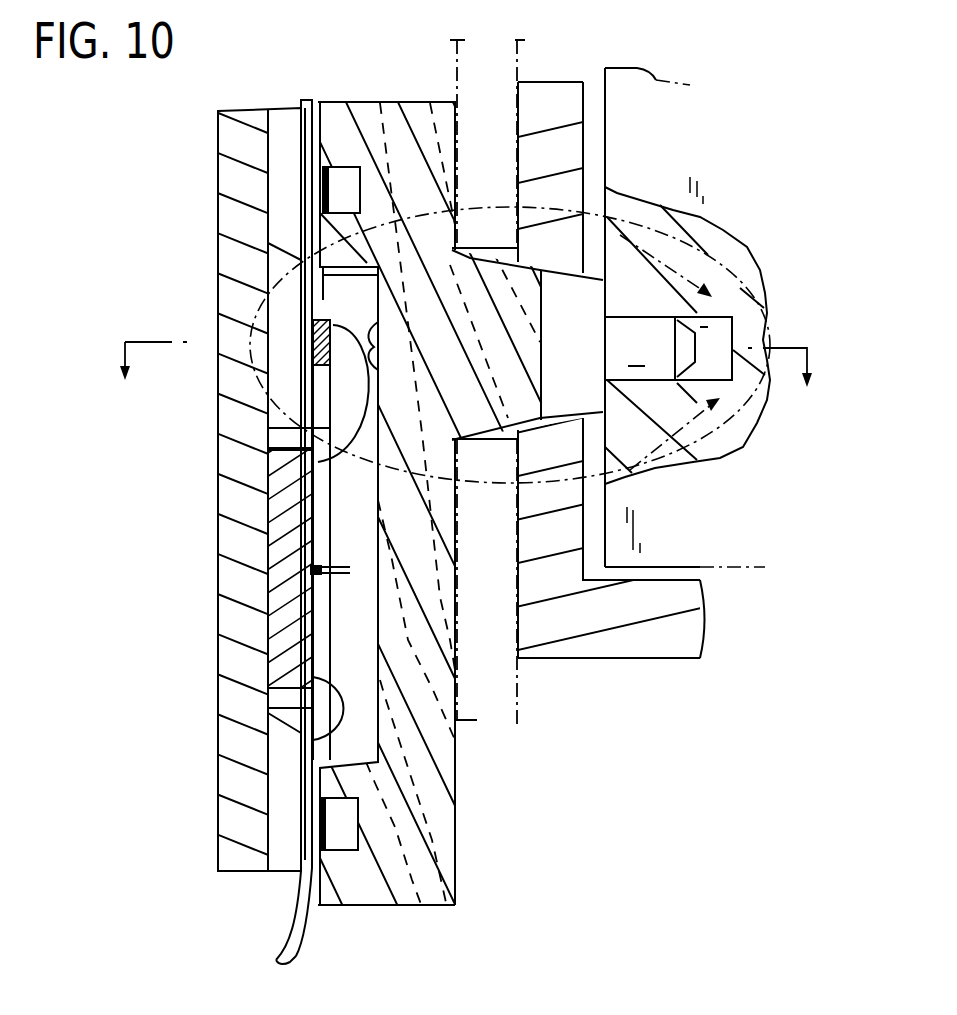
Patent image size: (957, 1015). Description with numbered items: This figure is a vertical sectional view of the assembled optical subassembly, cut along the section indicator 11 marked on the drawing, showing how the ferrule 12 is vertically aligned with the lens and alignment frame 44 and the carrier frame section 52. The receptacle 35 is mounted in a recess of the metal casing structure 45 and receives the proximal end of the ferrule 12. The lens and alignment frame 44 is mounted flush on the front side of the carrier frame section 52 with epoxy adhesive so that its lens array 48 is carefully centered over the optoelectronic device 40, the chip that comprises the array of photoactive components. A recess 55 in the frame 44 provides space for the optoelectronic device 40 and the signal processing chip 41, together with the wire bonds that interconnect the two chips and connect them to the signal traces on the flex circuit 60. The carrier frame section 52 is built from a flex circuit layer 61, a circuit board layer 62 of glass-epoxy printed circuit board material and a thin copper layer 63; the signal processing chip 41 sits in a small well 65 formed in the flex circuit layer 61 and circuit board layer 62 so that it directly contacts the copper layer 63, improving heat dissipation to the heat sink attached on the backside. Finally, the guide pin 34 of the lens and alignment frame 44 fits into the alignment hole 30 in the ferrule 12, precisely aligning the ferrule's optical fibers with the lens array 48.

The section line 11- 11 is at (466, 349).
The ferrule 12 is at (760, 612).
The alignment hole 30 is at (737, 322).
The guide pin 34 is at (640, 333).
The receptacle 35 is at (590, 140).
The optoelectronic device 40 is at (335, 335).
The signal processing chip 41 is at (266, 541).
The lens and alignment frame 44 is at (387, 102).
The metal casing structure 45 is at (477, 46).
The lens array 48 is at (547, 352).
The carrier frame section 52 is at (208, 496).
The recess 55 is at (370, 520).
The flex circuit 60 is at (300, 946).
The flex circuit layer 61 is at (307, 100).
The circuit board layer 62 is at (280, 880).
The copper layer 63 is at (228, 775).
The well 65 is at (290, 696).